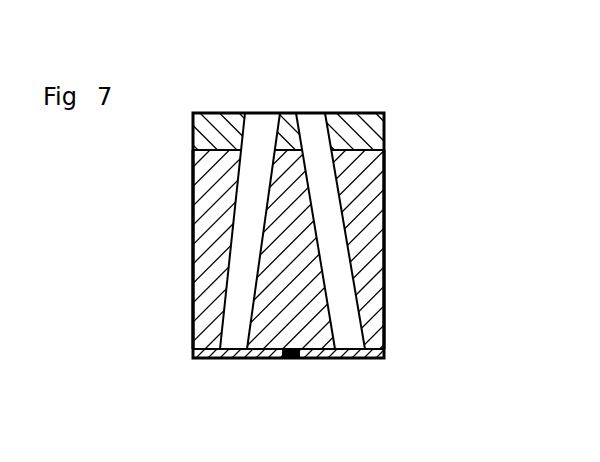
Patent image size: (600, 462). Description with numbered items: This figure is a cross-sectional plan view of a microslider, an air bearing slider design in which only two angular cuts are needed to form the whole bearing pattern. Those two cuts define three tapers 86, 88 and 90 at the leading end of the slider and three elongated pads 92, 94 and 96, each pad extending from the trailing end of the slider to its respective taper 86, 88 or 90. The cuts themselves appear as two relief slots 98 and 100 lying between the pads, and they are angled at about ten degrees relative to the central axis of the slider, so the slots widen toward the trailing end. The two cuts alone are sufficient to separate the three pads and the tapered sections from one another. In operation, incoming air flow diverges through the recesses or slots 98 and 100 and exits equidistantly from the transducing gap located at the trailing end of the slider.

The taper 86 is at (158, 164).
The taper 88 is at (414, 164).
The taper 90 is at (322, 84).
The elongated pad 92 is at (144, 249).
The elongated pad 94 is at (435, 249).
The elongated pad 96 is at (276, 385).
The relief slot 98 is at (219, 193).
The relief slot 100 is at (374, 199).